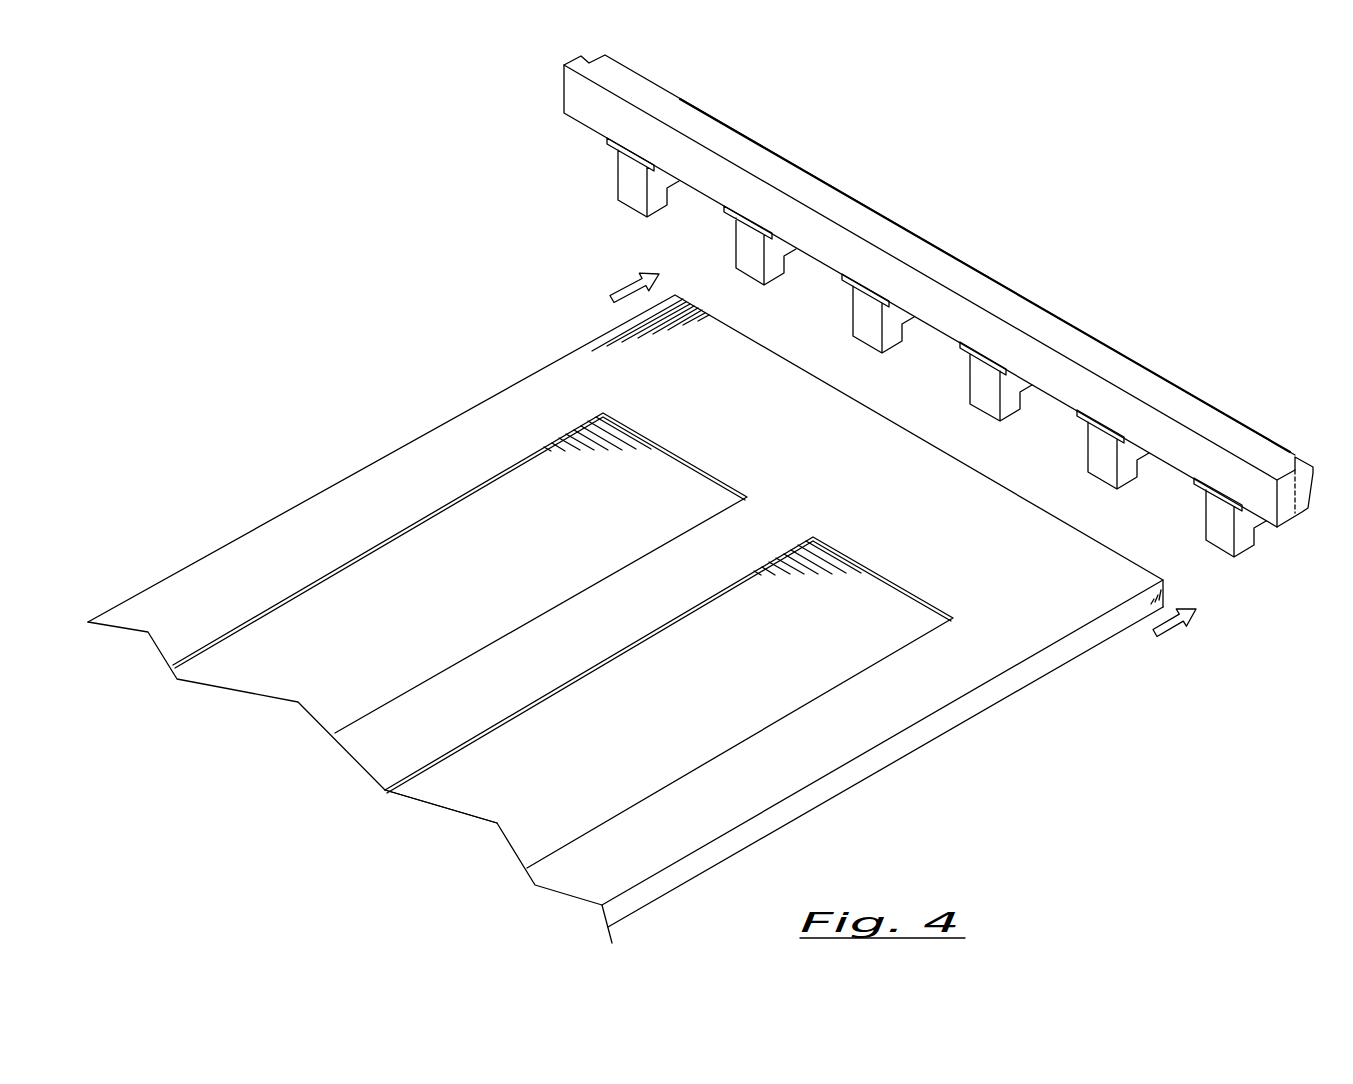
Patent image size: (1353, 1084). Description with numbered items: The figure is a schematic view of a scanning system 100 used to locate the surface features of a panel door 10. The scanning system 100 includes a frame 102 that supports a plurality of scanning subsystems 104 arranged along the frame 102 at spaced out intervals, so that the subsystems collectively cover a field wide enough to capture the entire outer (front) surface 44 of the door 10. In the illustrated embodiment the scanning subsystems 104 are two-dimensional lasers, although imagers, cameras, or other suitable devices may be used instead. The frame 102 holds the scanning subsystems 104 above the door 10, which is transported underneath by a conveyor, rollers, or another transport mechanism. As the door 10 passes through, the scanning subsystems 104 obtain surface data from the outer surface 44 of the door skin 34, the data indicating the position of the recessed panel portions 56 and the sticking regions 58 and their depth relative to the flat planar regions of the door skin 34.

The door 10 is at (298, 432).
The door skin 34 is at (1024, 616).
The outer (front) surface 44 is at (890, 717).
The recessed panel portion 56 is at (430, 619).
The sticking region 58 is at (481, 493).
The scanning system 100 is at (940, 347).
The frame 102 is at (1224, 432).
The scanning subsystem 104 is at (1243, 539).